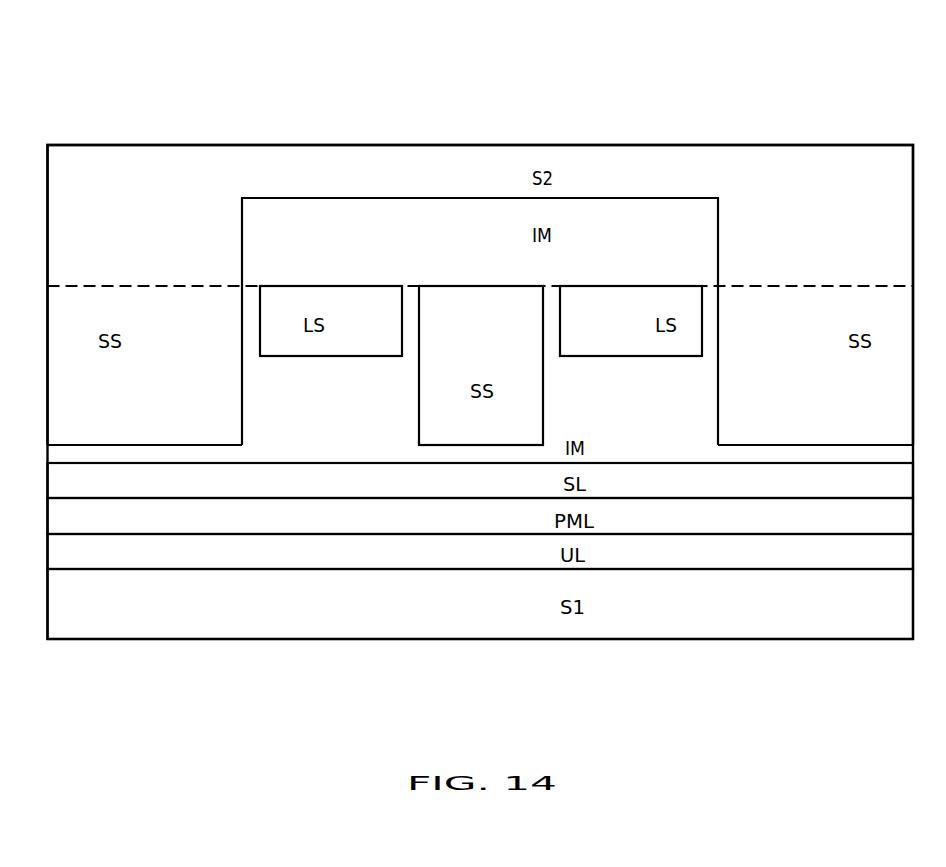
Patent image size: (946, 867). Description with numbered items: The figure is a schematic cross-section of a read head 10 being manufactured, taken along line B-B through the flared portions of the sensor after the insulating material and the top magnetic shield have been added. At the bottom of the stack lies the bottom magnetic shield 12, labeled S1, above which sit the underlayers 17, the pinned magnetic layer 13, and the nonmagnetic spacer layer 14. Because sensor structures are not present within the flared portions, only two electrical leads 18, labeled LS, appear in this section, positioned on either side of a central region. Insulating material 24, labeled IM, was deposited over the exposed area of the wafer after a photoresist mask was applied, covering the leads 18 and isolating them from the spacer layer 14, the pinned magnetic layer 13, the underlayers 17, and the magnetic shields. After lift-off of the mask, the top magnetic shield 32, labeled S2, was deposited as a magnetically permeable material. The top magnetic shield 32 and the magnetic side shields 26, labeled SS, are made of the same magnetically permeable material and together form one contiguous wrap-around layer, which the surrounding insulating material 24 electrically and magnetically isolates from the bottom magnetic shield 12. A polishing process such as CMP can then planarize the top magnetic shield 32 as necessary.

The read head 10 is at (380, 74).
The bottom magnetic shield 12 is at (413, 618).
The pinned magnetic layer 13 is at (413, 532).
The nonmagnetic spacer layer 14 is at (413, 494).
The underlayers 17 is at (413, 566).
The sensor and lead structures 18 is at (385, 336).
The insulating material 24 is at (430, 246).
The magnetic side shields 26 is at (200, 352).
The top magnetic shield 32 is at (430, 188).